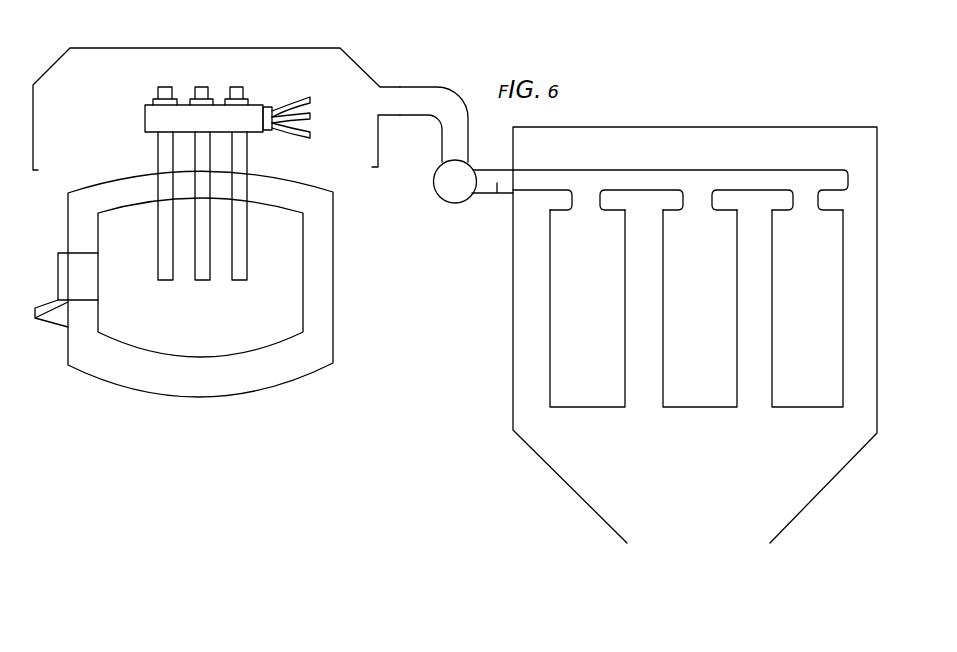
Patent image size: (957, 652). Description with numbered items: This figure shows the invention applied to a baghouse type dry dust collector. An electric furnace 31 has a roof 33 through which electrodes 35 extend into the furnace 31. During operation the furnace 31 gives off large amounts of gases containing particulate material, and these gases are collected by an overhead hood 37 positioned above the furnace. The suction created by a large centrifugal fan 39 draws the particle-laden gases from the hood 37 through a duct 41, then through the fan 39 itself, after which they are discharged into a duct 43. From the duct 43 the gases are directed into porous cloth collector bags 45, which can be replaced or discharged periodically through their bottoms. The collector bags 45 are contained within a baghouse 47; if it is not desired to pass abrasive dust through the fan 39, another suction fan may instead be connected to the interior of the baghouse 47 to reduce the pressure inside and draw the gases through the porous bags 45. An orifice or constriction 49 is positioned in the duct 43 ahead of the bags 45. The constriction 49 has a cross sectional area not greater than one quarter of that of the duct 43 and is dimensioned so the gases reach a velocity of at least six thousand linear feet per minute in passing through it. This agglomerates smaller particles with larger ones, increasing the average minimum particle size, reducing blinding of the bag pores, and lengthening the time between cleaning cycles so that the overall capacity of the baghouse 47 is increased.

The electric furnace 31 is at (334, 290).
The roof 33 is at (268, 176).
The electrodes 35 is at (155, 149).
The overhead hood 37 is at (308, 25).
The centrifugal fan 39 is at (455, 203).
The duct 41 is at (428, 87).
The duct 43 is at (634, 171).
The porous cloth collector bags 45 is at (627, 298).
The baghouse 47 is at (820, 127).
The orifice or constriction 49 is at (497, 174).